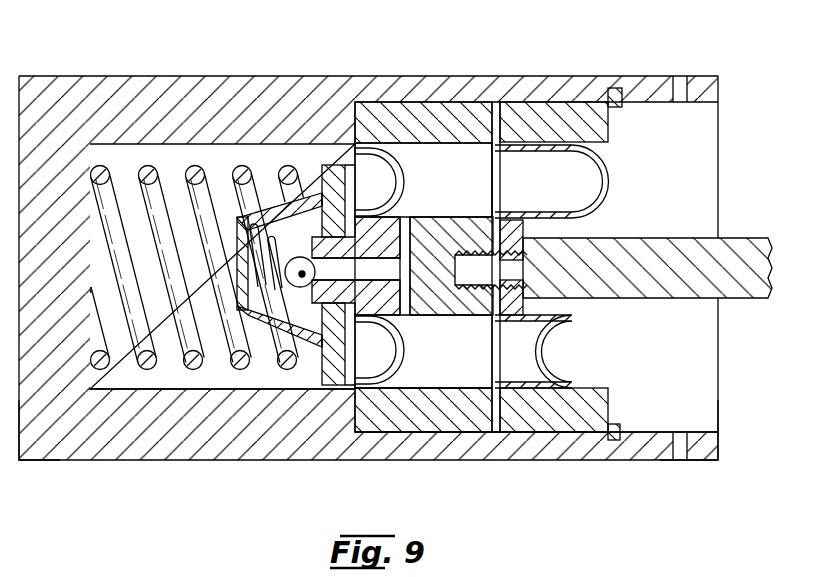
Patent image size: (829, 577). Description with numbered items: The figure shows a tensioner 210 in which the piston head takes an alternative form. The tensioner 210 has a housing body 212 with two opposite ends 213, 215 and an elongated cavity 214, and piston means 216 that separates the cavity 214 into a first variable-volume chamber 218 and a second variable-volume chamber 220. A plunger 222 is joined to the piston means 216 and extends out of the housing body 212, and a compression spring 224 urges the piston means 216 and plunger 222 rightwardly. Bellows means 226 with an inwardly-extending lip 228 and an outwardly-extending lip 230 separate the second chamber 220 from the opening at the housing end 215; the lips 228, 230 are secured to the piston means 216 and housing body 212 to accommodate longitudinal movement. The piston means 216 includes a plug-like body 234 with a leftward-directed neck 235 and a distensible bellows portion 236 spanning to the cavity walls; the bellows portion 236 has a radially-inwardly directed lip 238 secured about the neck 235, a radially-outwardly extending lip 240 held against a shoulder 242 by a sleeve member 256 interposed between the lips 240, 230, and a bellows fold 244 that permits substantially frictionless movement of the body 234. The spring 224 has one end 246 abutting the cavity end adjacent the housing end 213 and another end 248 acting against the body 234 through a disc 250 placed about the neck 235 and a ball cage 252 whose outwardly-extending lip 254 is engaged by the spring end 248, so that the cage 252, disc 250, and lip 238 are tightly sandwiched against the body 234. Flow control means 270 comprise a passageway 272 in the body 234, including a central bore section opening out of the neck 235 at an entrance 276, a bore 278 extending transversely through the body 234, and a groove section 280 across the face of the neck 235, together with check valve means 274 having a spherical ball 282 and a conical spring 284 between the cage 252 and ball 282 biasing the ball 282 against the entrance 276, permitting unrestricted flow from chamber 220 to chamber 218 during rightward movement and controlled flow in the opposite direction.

The tensioner 210 is at (296, 46).
The housing body 212 is at (143, 470).
The housing body end 213 is at (40, 466).
The elongated cavity 214 is at (197, 216).
The housing body end 215 is at (700, 462).
The piston means 216 is at (376, 99).
The first variable-volume chamber 218 is at (240, 392).
The second variable-volume chamber 220 is at (444, 400).
The plunger 222 is at (688, 238).
The compression spring 224 is at (117, 371).
The bellows means 226 is at (606, 180).
The inwardly-extending lip 228 is at (500, 238).
The outwardly-extending lip 230 is at (492, 152).
The plug-like body 234 is at (425, 218).
The neck 235 is at (292, 287).
The distensible bellows portion 236 is at (379, 266).
The radially-inwardly directed lip 238 is at (375, 266).
The radially-outwardly extending lip 240 is at (352, 100).
The shoulder 242 is at (386, 432).
The bellows fold 244 is at (436, 395).
The spring end 246 is at (106, 170).
The spring end 248 is at (300, 175).
The disc 250 is at (330, 165).
The ball cage 252 is at (242, 225).
The outwardly-extending lip 254 is at (326, 390).
The sleeve member 256 is at (440, 115).
The flow control means 270 is at (409, 206).
The passageway 272 is at (432, 305).
The check valve means 274 is at (141, 370).
The entrance 276 is at (322, 272).
The bore 278 is at (406, 320).
The groove section 280 is at (278, 253).
The spherical ball 282 is at (238, 388).
The conical spring 284 is at (209, 371).